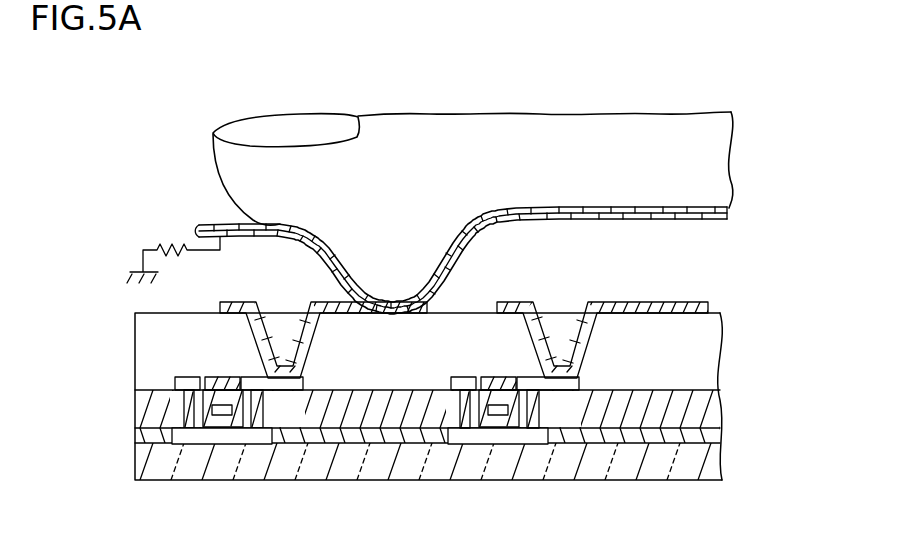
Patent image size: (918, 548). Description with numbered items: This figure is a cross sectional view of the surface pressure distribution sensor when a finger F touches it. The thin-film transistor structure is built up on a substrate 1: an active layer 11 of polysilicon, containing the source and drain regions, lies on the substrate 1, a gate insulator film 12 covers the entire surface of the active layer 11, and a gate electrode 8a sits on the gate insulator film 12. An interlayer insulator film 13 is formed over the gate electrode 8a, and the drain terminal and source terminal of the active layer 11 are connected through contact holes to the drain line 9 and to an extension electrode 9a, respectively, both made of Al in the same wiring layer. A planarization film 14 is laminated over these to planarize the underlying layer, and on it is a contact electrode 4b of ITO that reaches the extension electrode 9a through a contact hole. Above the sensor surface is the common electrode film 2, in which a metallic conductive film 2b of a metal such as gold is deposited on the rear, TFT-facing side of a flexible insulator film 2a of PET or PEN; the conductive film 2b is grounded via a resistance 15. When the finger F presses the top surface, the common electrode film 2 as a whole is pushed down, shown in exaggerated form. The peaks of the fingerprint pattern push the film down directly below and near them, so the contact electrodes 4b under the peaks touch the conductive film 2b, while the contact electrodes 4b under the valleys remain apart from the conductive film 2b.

The substrate 1 is at (705, 461).
The common electrode film 2 is at (806, 200).
The flexible insulator film 2a is at (731, 212).
The metallic conductive film 2b is at (724, 222).
The contact electrode 4b is at (712, 302).
The gate electrode 8a is at (490, 444).
The drain line 9 is at (461, 444).
The extension electrode 9a is at (582, 430).
The active layer 11 is at (528, 428).
The gate insulator film 12 is at (705, 435).
The interlayer insulator film 13 is at (708, 407).
The planarization film 14 is at (700, 354).
The resistance 15 is at (170, 241).
The finger F is at (473, 168).